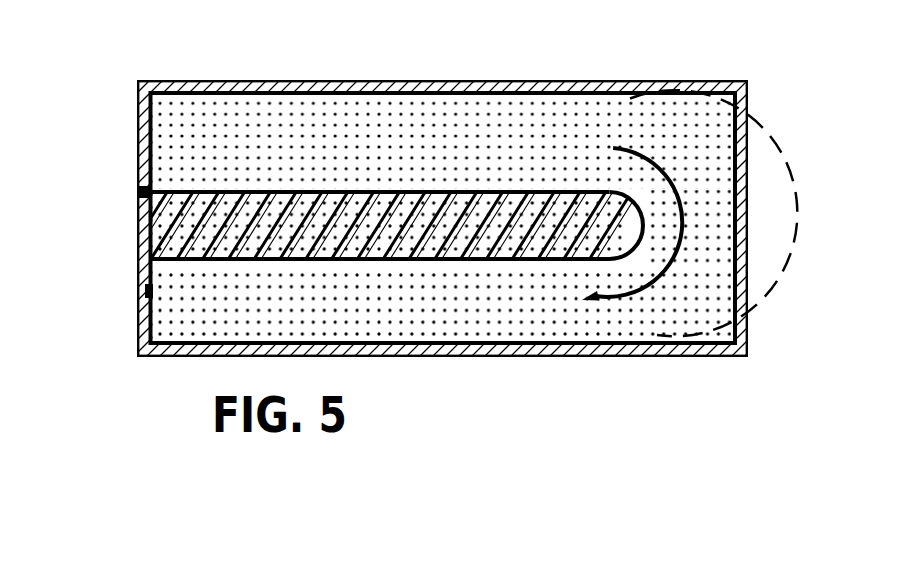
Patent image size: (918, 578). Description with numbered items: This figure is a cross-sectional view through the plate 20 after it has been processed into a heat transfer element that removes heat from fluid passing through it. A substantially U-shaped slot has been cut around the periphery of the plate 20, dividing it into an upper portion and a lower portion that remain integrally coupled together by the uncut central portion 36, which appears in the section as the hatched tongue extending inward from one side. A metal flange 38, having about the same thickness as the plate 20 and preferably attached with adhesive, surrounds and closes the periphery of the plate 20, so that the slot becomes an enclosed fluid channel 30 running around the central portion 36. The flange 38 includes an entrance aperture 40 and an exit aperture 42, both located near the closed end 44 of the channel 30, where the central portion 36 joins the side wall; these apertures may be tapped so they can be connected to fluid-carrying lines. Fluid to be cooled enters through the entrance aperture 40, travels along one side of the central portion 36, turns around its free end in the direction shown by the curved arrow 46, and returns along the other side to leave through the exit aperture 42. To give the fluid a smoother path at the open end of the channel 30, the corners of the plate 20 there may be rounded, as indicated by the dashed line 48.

The plate 20 is at (698, 115).
The fluid channel 30 is at (502, 318).
The uncut central portion 36 is at (298, 191).
The flange 38 is at (748, 332).
The entrance aperture 40 is at (138, 142).
The exit aperture 42 is at (137, 298).
The closed end of the channel 44 is at (137, 223).
The curved arrow 46 is at (731, 245).
The dashed line 48 is at (731, 168).